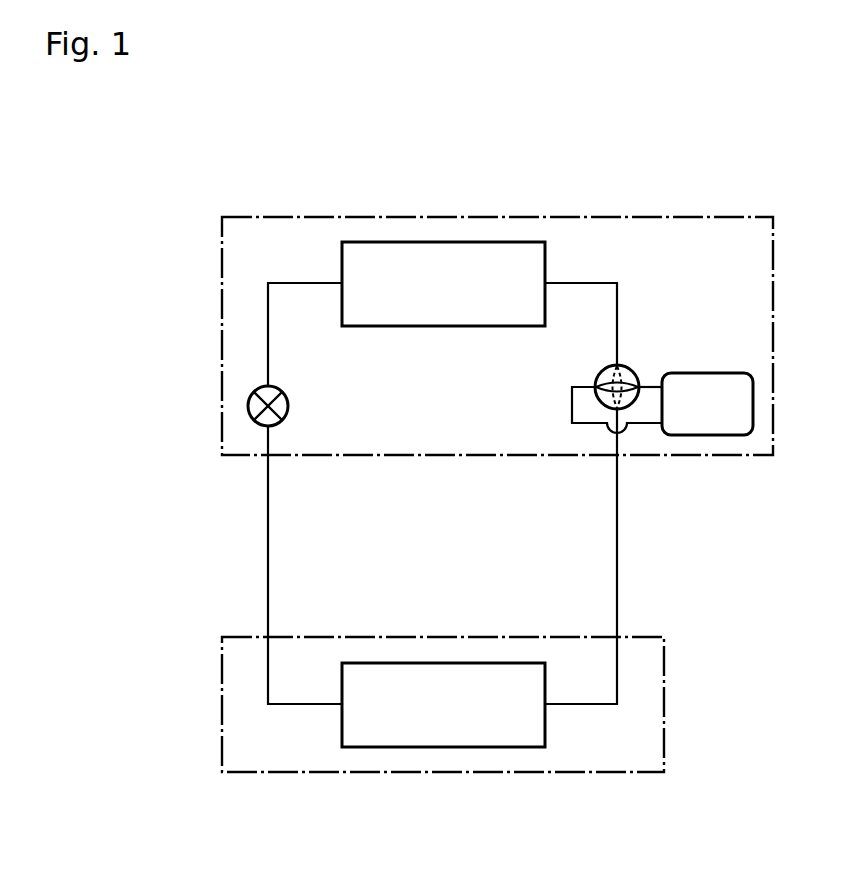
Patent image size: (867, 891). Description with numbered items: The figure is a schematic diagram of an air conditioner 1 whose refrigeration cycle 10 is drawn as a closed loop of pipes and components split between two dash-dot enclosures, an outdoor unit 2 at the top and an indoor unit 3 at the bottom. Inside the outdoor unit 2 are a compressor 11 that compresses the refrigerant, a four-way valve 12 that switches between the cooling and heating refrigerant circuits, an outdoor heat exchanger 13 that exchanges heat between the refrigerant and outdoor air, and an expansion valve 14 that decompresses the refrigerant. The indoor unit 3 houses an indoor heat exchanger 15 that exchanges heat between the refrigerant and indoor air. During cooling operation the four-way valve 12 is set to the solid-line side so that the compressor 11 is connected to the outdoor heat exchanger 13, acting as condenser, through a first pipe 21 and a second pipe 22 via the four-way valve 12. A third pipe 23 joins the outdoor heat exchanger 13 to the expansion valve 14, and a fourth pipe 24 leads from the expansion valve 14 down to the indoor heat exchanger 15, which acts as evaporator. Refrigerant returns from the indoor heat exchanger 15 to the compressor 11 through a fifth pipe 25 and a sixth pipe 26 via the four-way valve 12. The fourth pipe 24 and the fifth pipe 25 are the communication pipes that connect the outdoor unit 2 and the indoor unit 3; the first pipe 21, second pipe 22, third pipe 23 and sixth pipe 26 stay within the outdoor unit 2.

The air conditioner 1 is at (497, 180).
The outdoor unit 2 is at (640, 216).
The indoor unit 3 is at (652, 637).
The refrigeration cycle 10 is at (316, 272).
The compressor 11 is at (708, 373).
The four-way valve 12 is at (603, 373).
The outdoor heat exchanger 13 is at (547, 265).
The expansion valve 14 is at (289, 405).
The indoor heat exchanger 15 is at (547, 728).
The first pipe 21 is at (650, 386).
The second pipe 22 is at (620, 318).
The third pipe 23 is at (270, 325).
The fourth pipe 24 is at (270, 560).
The fifth pipe 25 is at (619, 540).
The sixth pipe 26 is at (570, 400).